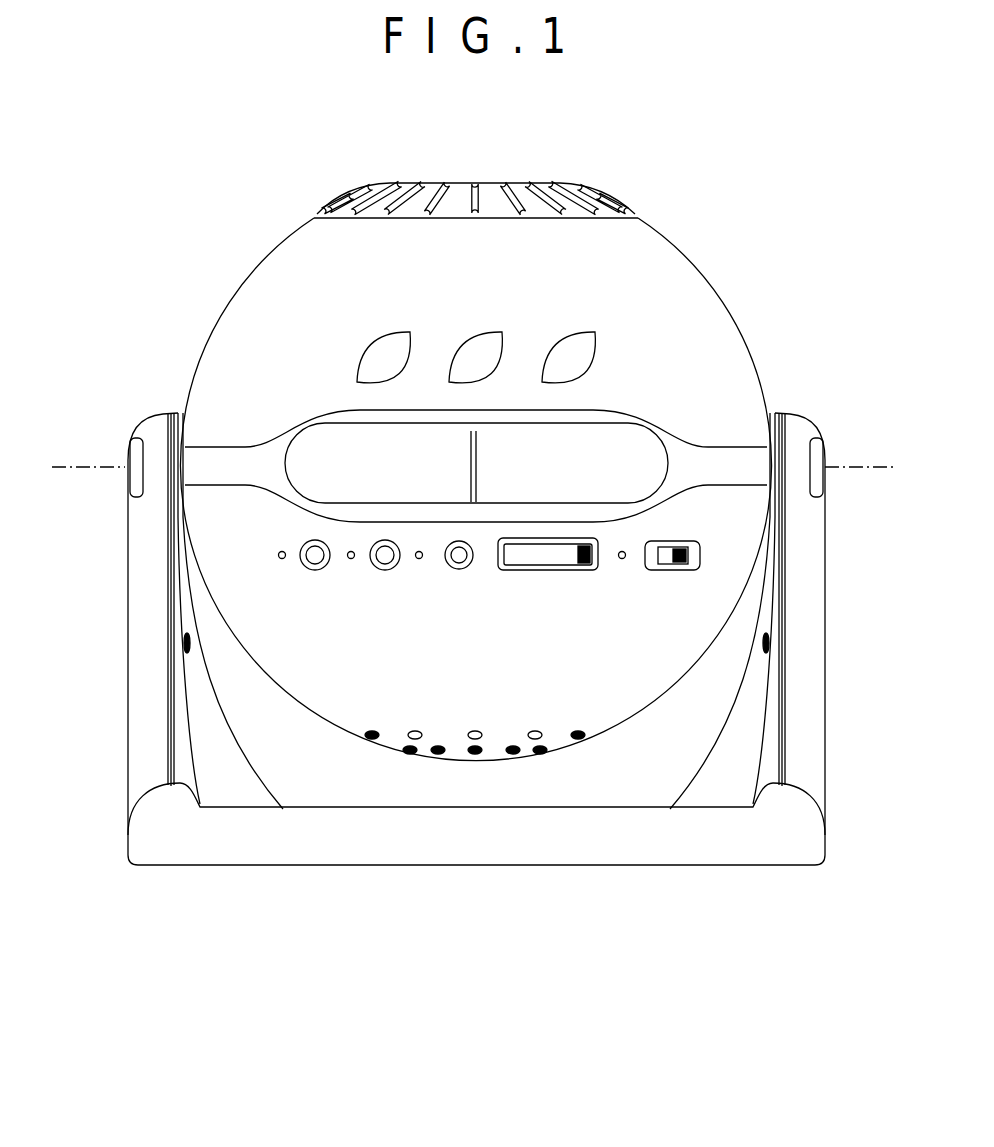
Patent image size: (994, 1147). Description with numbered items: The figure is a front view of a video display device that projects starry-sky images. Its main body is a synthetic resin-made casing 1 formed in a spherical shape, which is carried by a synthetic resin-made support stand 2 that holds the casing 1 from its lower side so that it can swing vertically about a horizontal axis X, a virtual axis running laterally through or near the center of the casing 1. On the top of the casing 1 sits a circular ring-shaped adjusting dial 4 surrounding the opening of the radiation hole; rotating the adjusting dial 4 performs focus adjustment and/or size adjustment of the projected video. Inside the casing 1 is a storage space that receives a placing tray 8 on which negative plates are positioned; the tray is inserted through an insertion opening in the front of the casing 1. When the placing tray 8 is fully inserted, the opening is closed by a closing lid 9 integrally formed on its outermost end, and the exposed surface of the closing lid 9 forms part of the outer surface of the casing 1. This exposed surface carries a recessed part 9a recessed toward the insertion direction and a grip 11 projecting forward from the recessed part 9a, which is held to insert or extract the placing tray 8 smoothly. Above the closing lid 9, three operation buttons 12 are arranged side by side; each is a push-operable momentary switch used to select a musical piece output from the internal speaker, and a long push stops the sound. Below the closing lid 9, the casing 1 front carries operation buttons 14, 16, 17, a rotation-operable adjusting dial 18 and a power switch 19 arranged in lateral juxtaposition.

The casing 1 is at (220, 272).
The support stand 2 is at (560, 866).
The adjusting dial 4 is at (600, 193).
The placing tray 8 is at (607, 456).
The closing lid 9 is at (352, 447).
The recessed part 9a is at (332, 487).
The grip 11 is at (468, 468).
The operation button 12 is at (387, 343).
The operation button 14 is at (312, 571).
The operation button 16 is at (382, 571).
The operation button 17 is at (458, 570).
The adjusting dial 18 is at (527, 571).
The power switch 19 is at (660, 571).
The horizontal axis X is at (843, 470).